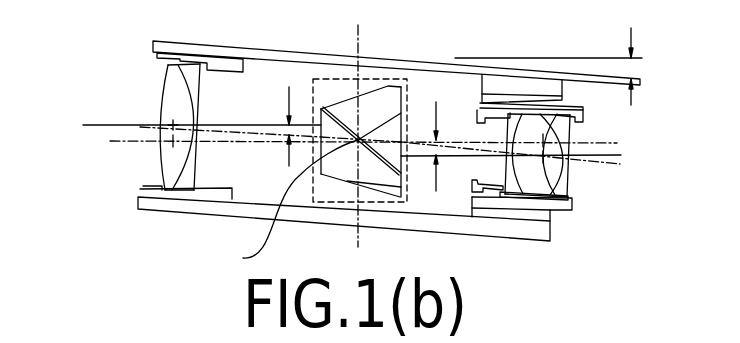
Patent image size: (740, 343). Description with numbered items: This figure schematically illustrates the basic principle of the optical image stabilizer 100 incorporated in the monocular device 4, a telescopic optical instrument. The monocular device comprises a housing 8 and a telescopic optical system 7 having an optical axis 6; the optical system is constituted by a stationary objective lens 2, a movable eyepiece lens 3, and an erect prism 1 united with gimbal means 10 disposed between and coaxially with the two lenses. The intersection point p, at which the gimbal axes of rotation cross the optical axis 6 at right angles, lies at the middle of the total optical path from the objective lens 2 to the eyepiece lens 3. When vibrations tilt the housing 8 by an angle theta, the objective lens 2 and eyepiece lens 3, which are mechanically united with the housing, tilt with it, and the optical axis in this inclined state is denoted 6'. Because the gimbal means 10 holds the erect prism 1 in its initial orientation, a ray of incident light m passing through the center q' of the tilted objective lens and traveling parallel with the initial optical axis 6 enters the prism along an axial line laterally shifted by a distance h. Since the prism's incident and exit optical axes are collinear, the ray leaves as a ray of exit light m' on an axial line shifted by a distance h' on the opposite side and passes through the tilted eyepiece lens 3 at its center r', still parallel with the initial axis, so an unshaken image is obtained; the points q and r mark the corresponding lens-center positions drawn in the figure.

The erect prism 1 is at (347, 182).
The objective lens 2 is at (167, 90).
The eyepiece lens 3 is at (570, 168).
The monocular device 4 is at (196, 45).
The optical axis 6 is at (327, 175).
The optical axis in the inclined state 6' is at (326, 116).
The telescopic optical system 7 is at (445, 92).
The housing 8 is at (217, 215).
The gimbal means 10 is at (407, 190).
The optical image stabilizer 100 is at (298, 85).
The ray of incident light m is at (178, 148).
The ray of exit light m' is at (535, 142).
The point q is at (122, 176).
The center of the objective lens in the inclined state q' is at (128, 90).
The point r is at (582, 129).
The center of the eyepiece lens in the inclined state r' is at (583, 187).
The intersection point p is at (291, 207).
The lateral shift distance h is at (278, 126).
The lateral shift distance on the opposite side h' is at (449, 152).